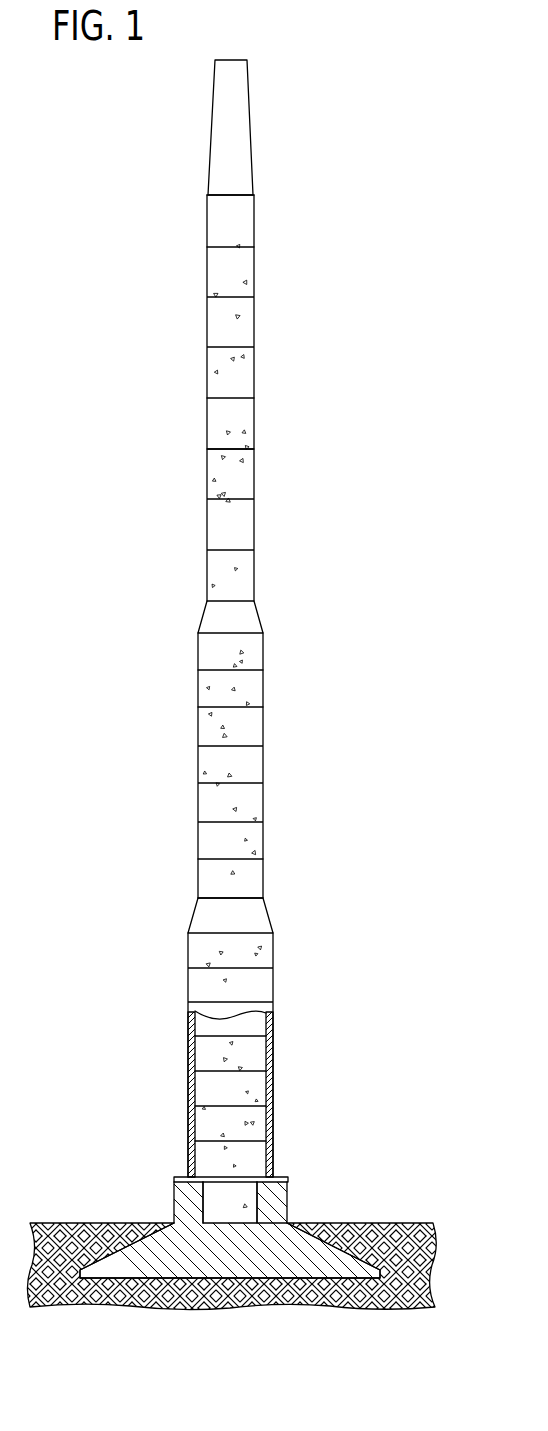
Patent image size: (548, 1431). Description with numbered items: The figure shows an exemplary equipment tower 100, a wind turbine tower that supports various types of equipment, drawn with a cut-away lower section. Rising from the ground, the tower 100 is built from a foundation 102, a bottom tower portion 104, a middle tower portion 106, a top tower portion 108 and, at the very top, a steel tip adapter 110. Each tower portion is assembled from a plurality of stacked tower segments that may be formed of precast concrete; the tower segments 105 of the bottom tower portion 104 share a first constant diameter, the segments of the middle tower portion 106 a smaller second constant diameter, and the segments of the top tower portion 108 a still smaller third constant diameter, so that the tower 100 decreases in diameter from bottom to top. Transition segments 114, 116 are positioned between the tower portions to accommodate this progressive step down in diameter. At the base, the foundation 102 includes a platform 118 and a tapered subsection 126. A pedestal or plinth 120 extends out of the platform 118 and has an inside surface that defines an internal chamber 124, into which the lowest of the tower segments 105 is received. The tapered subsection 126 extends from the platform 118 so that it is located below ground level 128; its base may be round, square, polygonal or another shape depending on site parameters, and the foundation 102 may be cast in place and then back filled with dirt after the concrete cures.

The equipment tower 100 is at (127, 117).
The foundation 102 is at (377, 1153).
The bottom tower portion 104 is at (165, 1028).
The tower segment 105 is at (205, 952).
The middle tower portion 106 is at (173, 780).
The top tower portion 108 is at (173, 327).
The steel tip adapter 110 is at (250, 127).
The transition segment 114 is at (268, 916).
The transition segment 116 is at (258, 618).
The platform 118 is at (232, 1222).
The pedestal 120 is at (287, 1200).
The internal chamber 124 is at (250, 1125).
The tapered subsection 126 is at (227, 1263).
The ground level 128 is at (393, 1223).